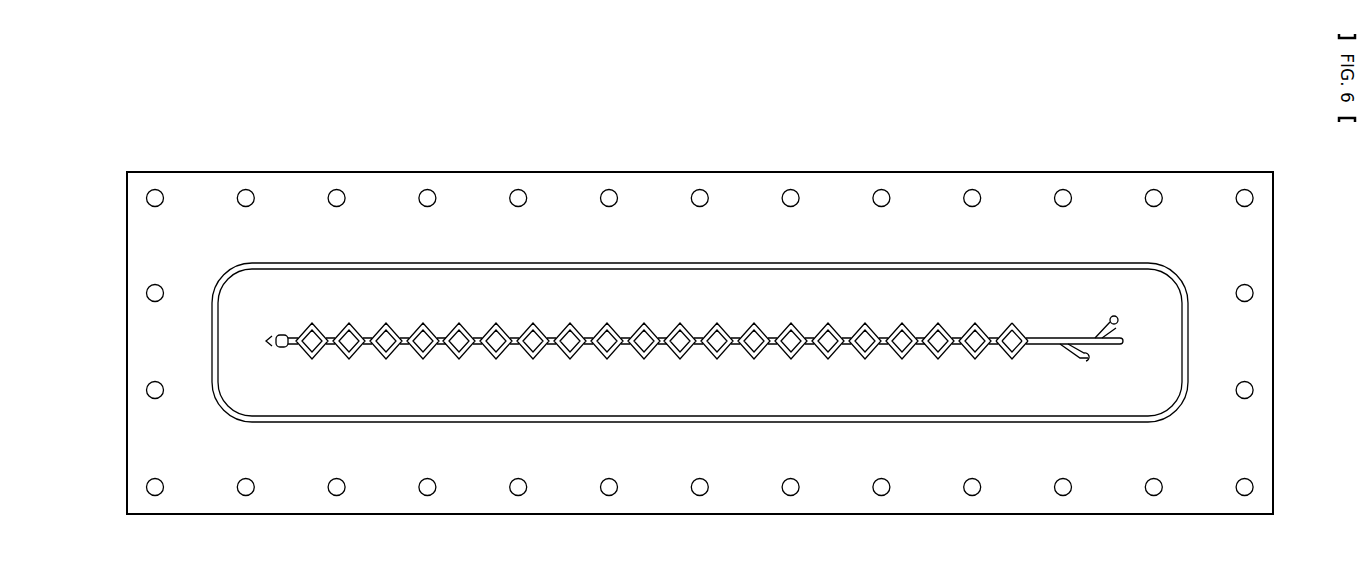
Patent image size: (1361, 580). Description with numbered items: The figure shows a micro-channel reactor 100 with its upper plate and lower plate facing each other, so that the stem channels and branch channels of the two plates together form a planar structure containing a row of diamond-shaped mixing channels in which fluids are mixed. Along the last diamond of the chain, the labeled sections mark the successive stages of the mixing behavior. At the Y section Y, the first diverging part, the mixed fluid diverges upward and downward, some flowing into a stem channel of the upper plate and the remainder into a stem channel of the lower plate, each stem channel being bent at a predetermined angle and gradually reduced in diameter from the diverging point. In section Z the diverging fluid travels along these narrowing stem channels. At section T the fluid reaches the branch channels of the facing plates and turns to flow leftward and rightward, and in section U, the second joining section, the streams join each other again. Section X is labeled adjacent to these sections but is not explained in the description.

The micro-channel reactor 100 is at (182, 81).
The section T is at (1004, 322).
The Y section Y is at (1022, 326).
The section U is at (992, 345).
The section Z is at (1010, 355).
The right connecting segment X is at (1040, 343).